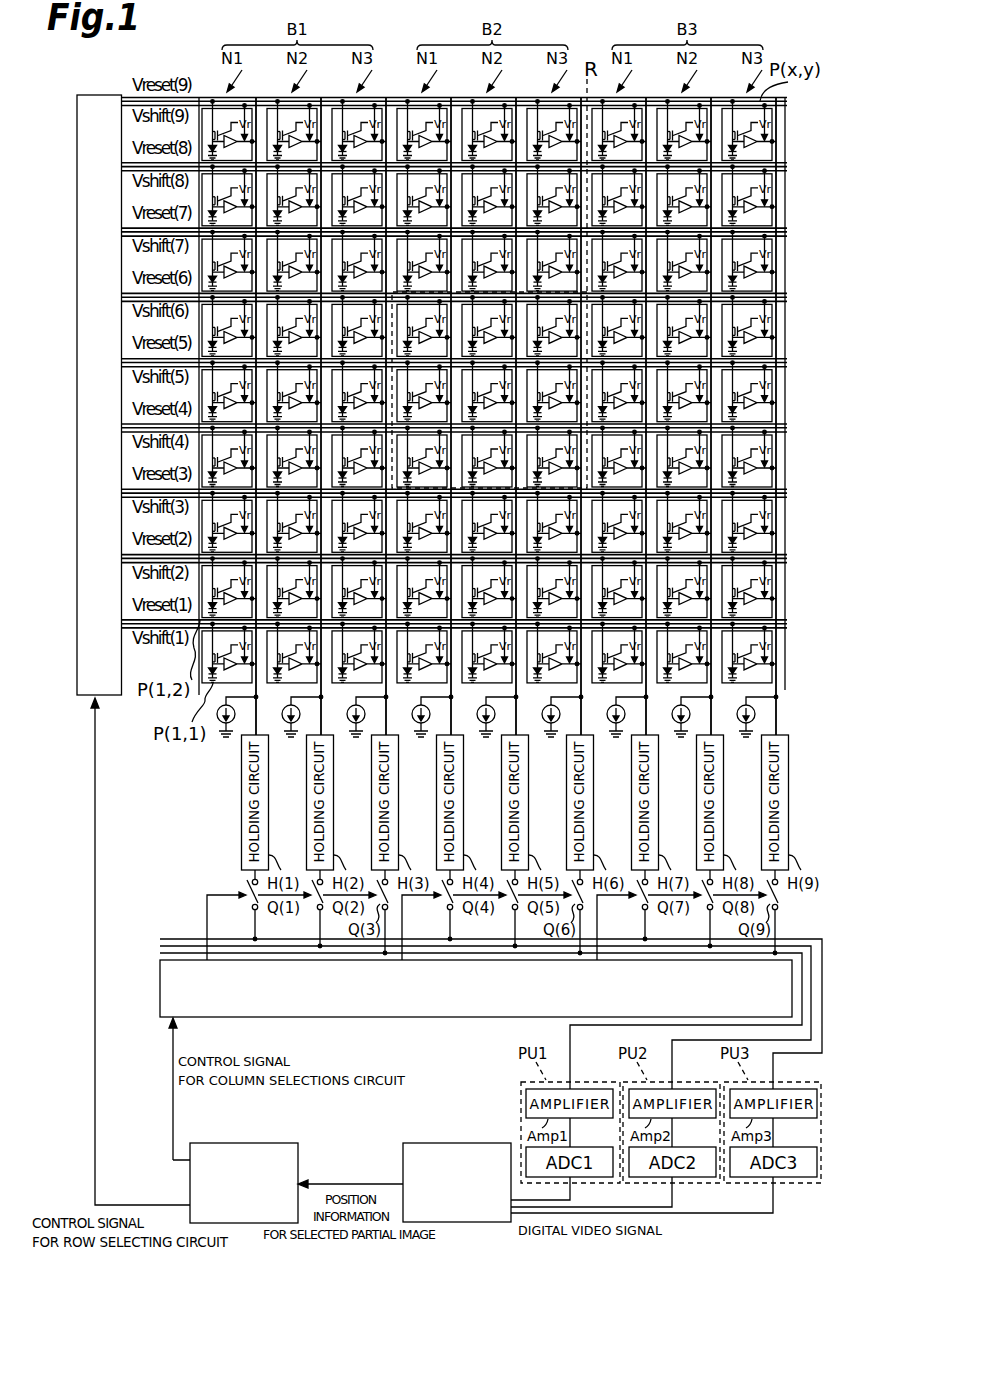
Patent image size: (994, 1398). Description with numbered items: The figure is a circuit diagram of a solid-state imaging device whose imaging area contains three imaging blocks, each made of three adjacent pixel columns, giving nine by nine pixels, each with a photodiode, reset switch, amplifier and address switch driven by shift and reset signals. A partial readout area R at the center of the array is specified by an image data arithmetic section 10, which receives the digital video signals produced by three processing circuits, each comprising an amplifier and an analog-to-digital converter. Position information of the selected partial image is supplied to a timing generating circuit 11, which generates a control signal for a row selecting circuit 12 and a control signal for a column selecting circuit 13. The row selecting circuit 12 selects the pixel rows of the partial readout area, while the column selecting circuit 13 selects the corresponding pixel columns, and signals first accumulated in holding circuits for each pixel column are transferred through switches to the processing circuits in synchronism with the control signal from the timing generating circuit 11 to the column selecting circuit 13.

The image data arithmetic section 10 is at (473, 1143).
The timing generating circuit 11 is at (265, 1142).
The row selecting circuit 12 is at (95, 95).
The column selecting circuit 13 is at (160, 990).